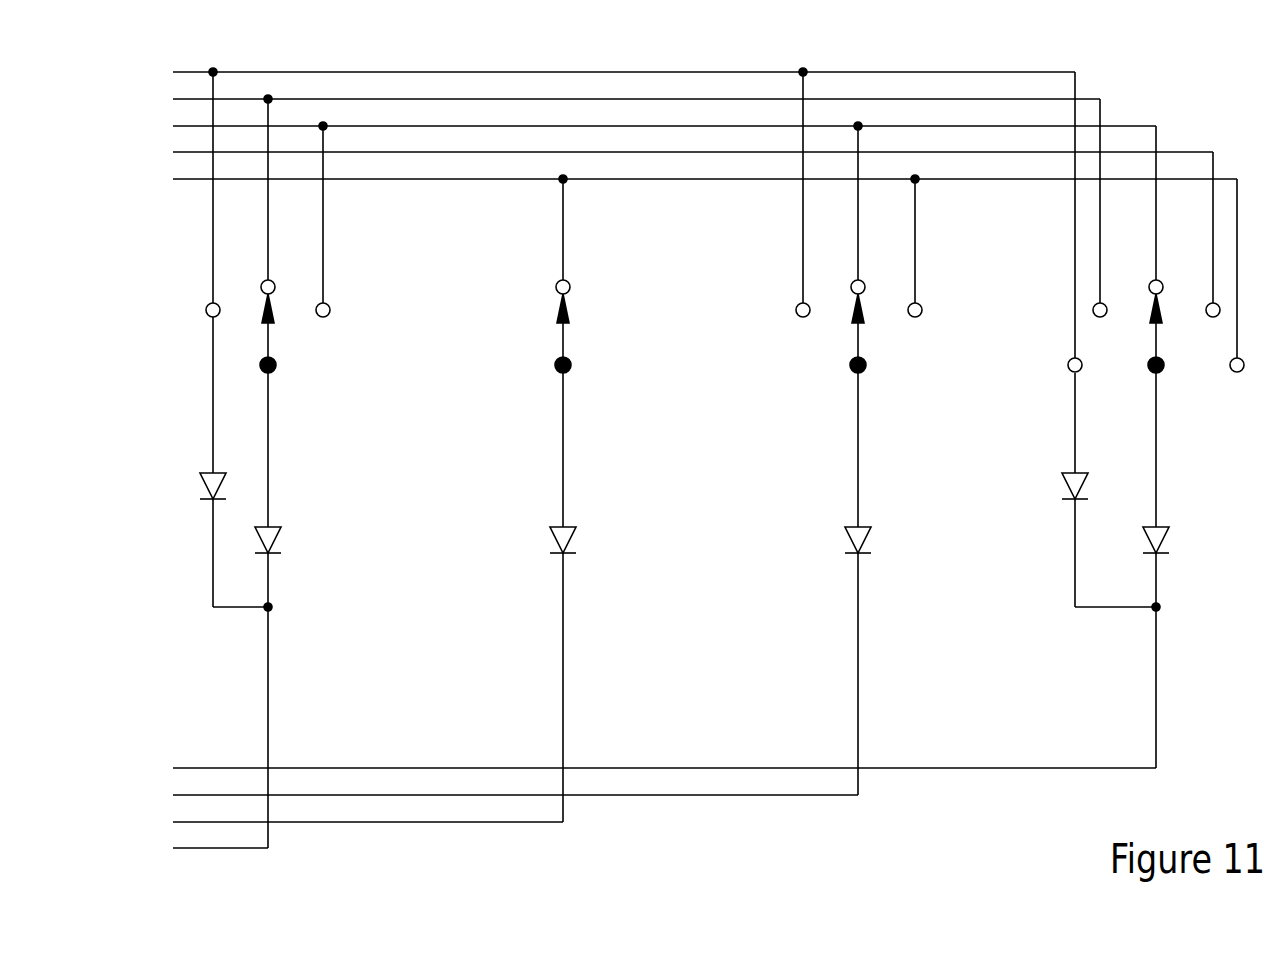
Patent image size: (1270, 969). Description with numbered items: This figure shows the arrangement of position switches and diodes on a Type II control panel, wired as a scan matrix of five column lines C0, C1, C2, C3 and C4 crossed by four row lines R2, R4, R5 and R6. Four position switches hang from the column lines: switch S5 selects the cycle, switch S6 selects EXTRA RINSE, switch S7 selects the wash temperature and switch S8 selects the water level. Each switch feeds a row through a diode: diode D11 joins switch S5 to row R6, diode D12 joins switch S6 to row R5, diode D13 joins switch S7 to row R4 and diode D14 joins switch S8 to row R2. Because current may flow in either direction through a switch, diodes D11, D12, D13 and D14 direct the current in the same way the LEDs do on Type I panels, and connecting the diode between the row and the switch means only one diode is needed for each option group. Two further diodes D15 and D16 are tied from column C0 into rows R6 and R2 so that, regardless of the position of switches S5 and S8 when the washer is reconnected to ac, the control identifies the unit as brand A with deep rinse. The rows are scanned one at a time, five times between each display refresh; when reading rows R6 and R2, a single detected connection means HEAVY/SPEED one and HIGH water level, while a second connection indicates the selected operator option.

The column line C0 is at (609, 213).
The column line C1 is at (622, 199).
The column line C2 is at (646, 120).
The column line C3 is at (678, 226).
The column line C4 is at (690, 267).
The cycle selection switch S5 is at (218, 403).
The extra rinse switch S6 is at (540, 403).
The wash temperature switch S7 is at (835, 403).
The water level switch S8 is at (1092, 403).
The diode D11 is at (293, 531).
The diode D12 is at (589, 531).
The diode D13 is at (884, 531).
The diode D14 is at (1182, 531).
The preset diode D15 is at (187, 477).
The preset diode D16 is at (1047, 477).
The row line R2 is at (644, 763).
The row line R4 is at (495, 790).
The row line R5 is at (348, 817).
The row line R6 is at (200, 843).